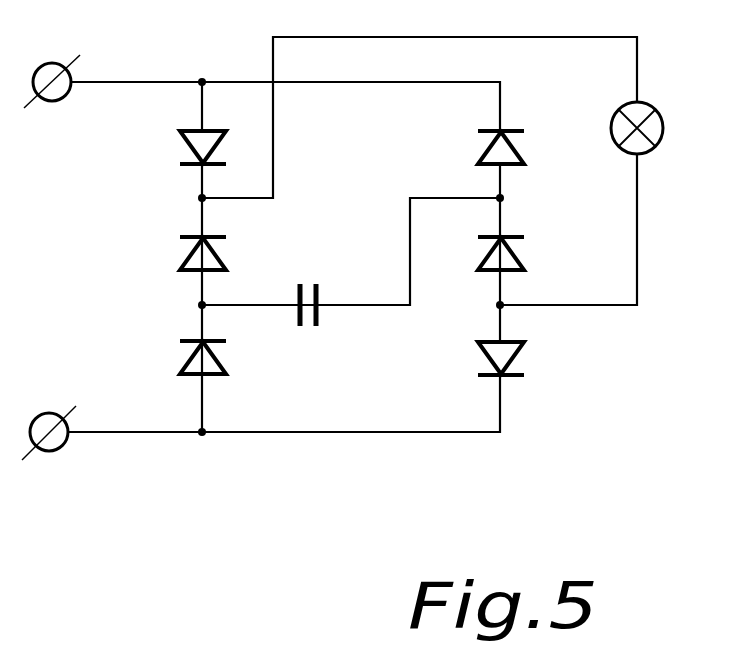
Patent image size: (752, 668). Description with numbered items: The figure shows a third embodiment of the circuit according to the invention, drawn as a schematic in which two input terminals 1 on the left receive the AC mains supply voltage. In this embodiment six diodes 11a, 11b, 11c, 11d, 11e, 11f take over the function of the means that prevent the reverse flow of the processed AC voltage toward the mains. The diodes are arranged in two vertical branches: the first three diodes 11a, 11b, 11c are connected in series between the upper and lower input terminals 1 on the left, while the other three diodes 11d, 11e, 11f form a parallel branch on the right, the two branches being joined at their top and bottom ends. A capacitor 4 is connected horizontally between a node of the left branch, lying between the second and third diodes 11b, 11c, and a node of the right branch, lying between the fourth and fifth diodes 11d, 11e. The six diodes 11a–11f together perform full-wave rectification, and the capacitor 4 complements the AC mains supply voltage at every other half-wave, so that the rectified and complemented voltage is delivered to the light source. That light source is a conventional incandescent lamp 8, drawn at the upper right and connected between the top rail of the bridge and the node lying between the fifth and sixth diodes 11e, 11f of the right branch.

The input terminals 1 is at (70, 72).
The capacitor 4 is at (312, 282).
The incandescent lamp 8 is at (661, 136).
The diode 11a is at (178, 140).
The diode 11b is at (178, 257).
The diode 11c is at (180, 358).
The diode 11d is at (480, 148).
The diode 11e is at (514, 258).
The diode 11f is at (516, 356).